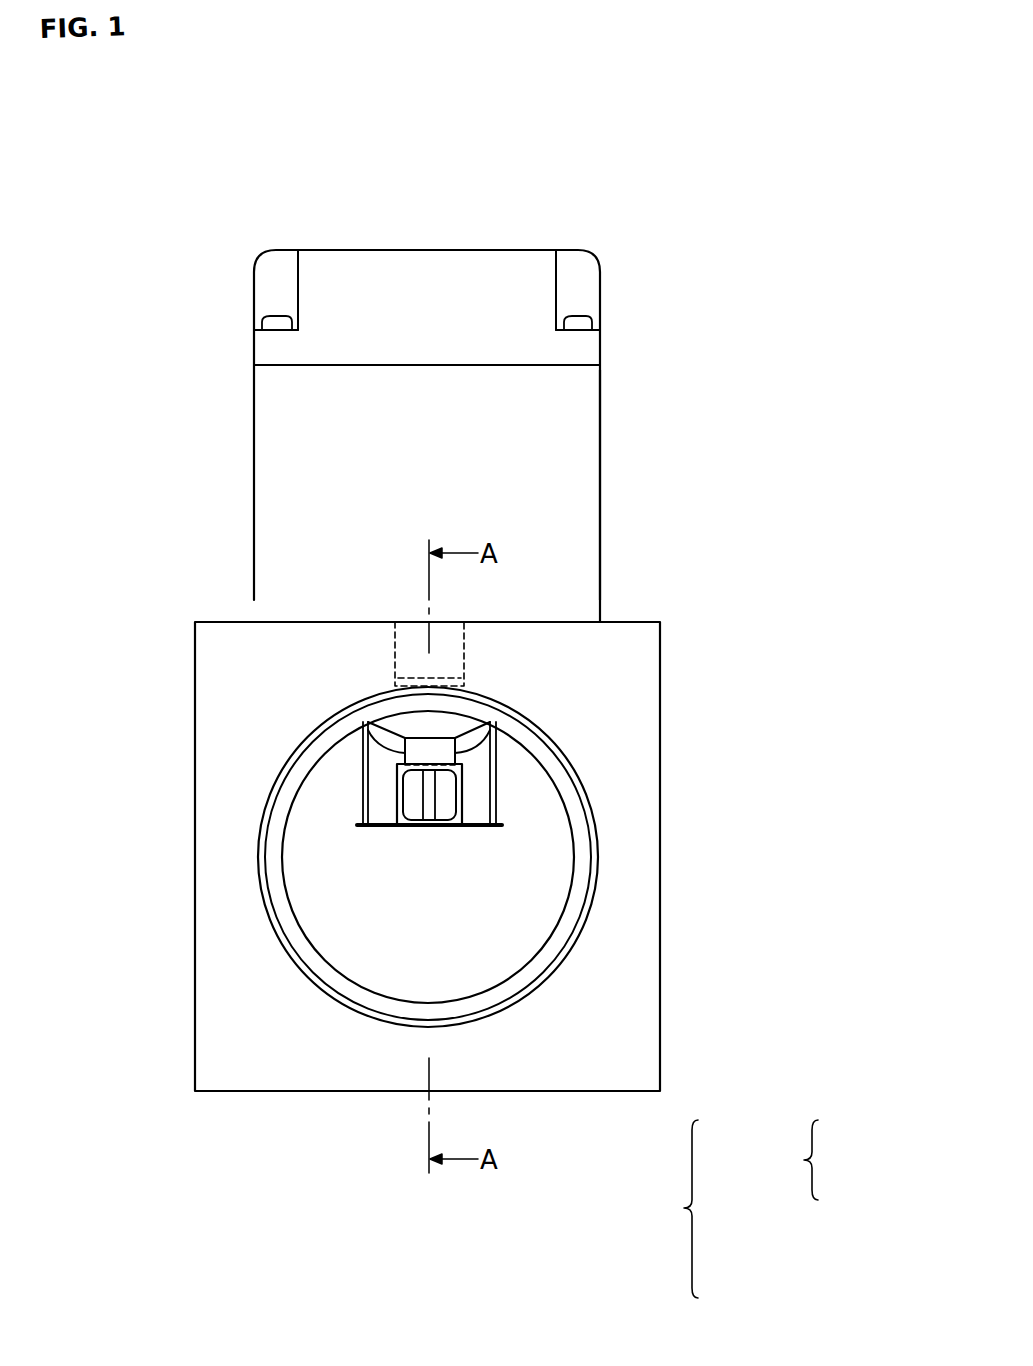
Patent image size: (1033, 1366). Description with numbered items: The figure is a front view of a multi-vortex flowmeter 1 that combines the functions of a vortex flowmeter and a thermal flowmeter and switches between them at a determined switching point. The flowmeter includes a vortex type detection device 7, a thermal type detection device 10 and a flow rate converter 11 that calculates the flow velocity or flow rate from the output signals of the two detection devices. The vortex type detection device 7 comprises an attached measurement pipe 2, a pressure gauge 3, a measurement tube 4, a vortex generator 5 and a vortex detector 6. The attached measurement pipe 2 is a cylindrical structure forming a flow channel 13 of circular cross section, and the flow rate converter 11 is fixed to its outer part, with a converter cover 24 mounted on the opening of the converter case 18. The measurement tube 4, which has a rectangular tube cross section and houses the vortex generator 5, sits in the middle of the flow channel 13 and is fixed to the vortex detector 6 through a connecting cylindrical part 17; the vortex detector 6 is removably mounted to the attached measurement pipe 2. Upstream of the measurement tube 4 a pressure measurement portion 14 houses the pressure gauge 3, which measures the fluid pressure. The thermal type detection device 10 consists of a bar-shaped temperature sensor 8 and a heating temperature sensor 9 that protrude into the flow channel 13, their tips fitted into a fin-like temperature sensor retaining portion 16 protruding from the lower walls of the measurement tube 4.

The multi-vortex flowmeter 1 is at (467, 199).
The attached measurement pipe 2 is at (213, 1026).
The pressure gauge 3 is at (417, 630).
The measurement tube 4 is at (462, 793).
The vortex generator 5 is at (428, 800).
The vortex detector 6 is at (442, 727).
The vortex type detection device 7 is at (692, 1209).
The temperature sensor 8 is at (497, 762).
The heating temperature sensor 9 is at (363, 775).
The thermal type detection device 10 is at (797, 1160).
The flow rate converter 11 is at (601, 447).
The flow channel 13 is at (387, 980).
The pressure measurement portion 14 is at (452, 672).
The temperature sensor retaining portion 16 is at (478, 828).
The connecting cylindrical part 17 is at (392, 733).
The converter case 18 is at (280, 443).
The converter cover 24 is at (355, 270).